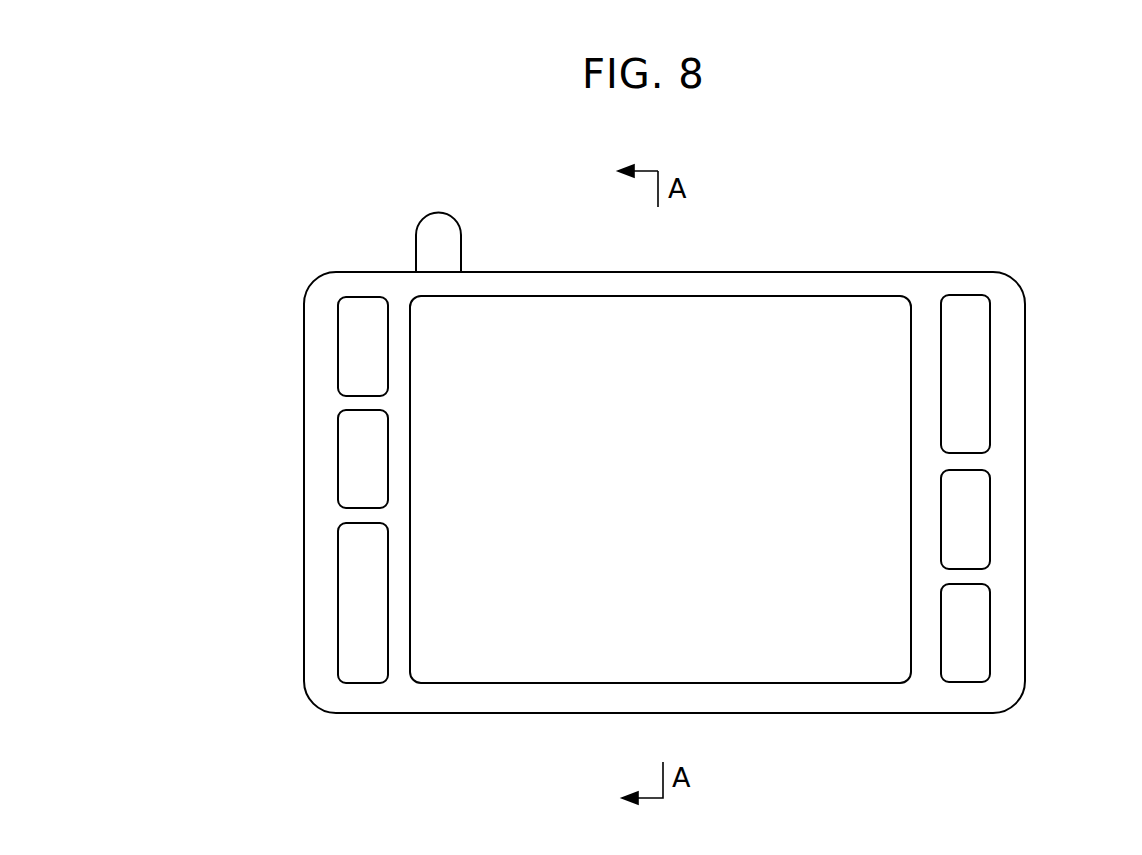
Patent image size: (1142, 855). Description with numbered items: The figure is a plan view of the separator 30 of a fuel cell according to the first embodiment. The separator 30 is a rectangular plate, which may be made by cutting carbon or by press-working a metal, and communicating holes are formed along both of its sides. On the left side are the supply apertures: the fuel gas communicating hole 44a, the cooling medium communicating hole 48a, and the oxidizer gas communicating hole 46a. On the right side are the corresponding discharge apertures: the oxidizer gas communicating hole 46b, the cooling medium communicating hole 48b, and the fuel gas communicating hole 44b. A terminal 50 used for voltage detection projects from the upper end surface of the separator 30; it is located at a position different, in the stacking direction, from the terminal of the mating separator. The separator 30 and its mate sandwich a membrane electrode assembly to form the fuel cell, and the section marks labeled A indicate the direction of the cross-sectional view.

The separator 30 is at (945, 253).
The terminal 50 is at (440, 212).
The fuel gas communicating hole (supply aperture) 44a is at (340, 343).
The cooling medium communicating hole (supply aperture) 48a is at (342, 468).
The oxidizer gas communicating hole (supply aperture) 46a is at (344, 668).
The oxidizer gas communicating hole (discharge aperture) 46b is at (985, 411).
The cooling medium communicating hole (discharge aperture) 48b is at (985, 541).
The fuel gas communicating hole (discharge aperture) 44b is at (985, 628).